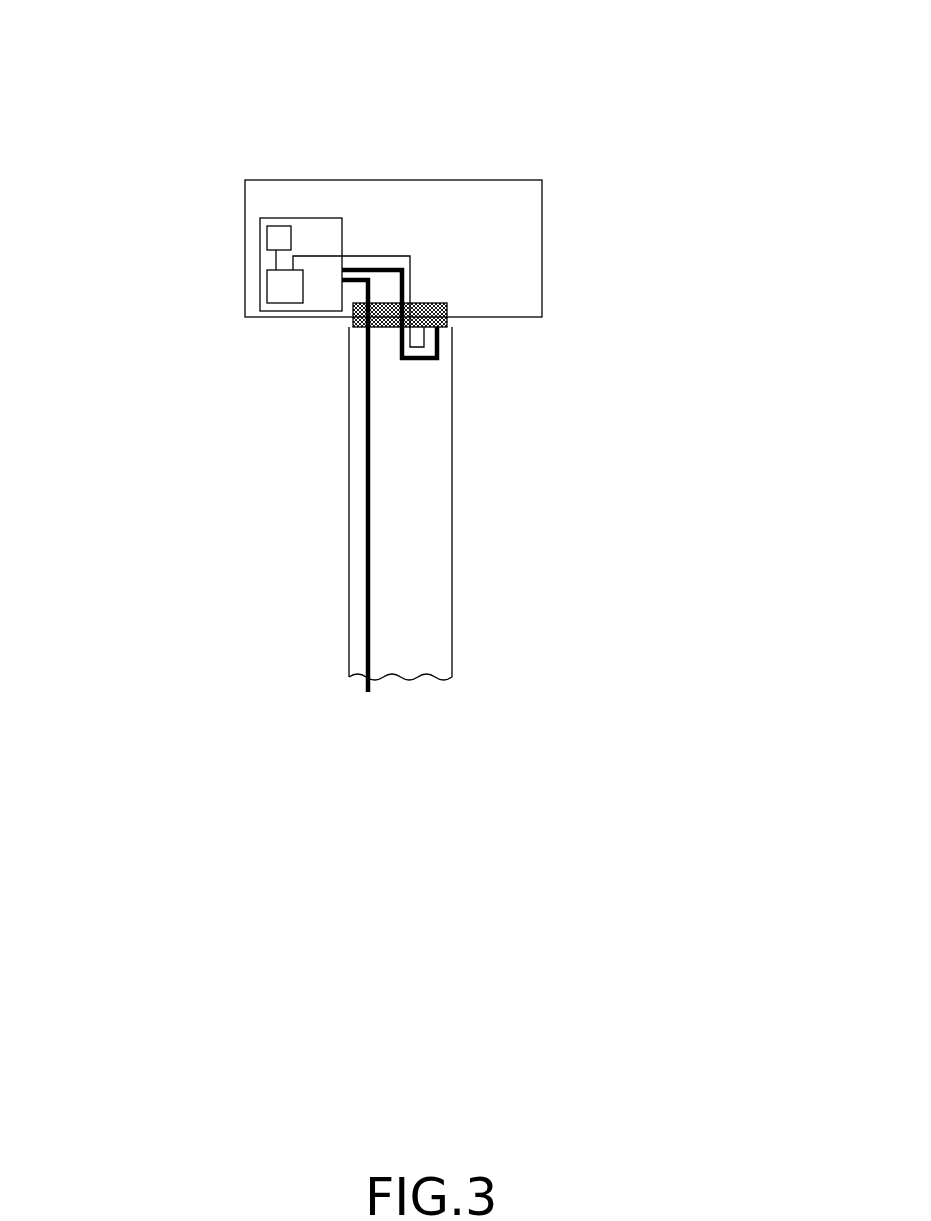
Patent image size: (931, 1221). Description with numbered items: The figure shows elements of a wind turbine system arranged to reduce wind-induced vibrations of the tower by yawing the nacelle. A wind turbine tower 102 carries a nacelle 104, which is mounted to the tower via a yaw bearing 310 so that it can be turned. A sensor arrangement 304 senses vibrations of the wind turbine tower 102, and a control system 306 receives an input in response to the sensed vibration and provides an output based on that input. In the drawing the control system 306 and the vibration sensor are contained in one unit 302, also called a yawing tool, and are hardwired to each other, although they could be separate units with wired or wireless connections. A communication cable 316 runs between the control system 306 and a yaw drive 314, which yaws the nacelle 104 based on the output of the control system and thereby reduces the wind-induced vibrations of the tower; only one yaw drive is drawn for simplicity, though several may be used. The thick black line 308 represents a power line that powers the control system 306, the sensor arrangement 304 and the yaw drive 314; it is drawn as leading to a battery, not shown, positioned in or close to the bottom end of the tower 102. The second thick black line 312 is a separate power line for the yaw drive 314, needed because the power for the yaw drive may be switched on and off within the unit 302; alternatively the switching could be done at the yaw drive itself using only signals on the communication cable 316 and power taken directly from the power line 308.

The wind turbine tower 102 is at (453, 618).
The nacelle 104 is at (523, 178).
The unit 302 is at (301, 217).
The sensor arrangement 304 is at (265, 237).
The control system 306 is at (267, 287).
The power line 308 is at (366, 495).
The yaw bearing 310 is at (381, 328).
The power line 312 is at (410, 352).
The yaw drive 314 is at (437, 343).
The communication cable 316 is at (412, 260).